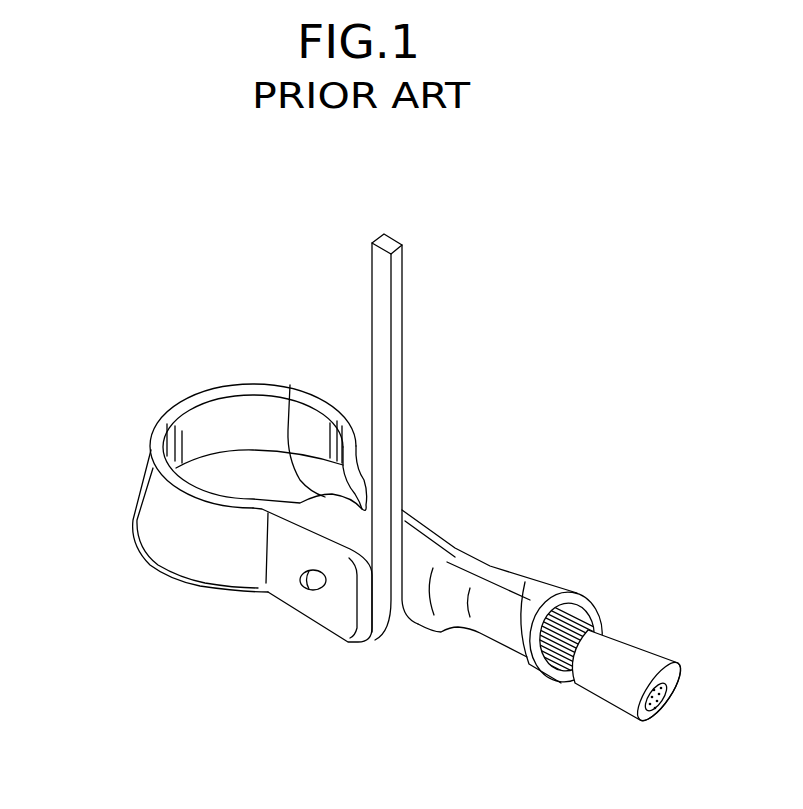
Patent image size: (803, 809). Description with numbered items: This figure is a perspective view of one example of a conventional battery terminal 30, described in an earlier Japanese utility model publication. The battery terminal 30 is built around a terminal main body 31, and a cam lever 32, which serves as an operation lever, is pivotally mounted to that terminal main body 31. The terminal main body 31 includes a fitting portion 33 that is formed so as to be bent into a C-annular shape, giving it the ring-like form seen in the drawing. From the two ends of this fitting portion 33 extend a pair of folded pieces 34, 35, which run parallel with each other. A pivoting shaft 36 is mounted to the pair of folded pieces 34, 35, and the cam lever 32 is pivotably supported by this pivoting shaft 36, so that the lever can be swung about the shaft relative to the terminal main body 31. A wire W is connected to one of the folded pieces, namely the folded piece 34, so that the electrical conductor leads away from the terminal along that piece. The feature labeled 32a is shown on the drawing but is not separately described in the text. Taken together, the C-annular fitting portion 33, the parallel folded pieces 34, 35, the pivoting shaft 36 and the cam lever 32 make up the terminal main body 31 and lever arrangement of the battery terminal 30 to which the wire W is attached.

The battery terminal 30 is at (512, 426).
The terminal main body 31 is at (153, 563).
The cam lever 32 is at (404, 355).
The slit 32a is at (290, 385).
The fitting portion 33 is at (136, 484).
The folded piece 34 is at (423, 523).
The folded piece 35 is at (345, 640).
The pivoting shaft 36 is at (302, 586).
The wire W is at (636, 653).